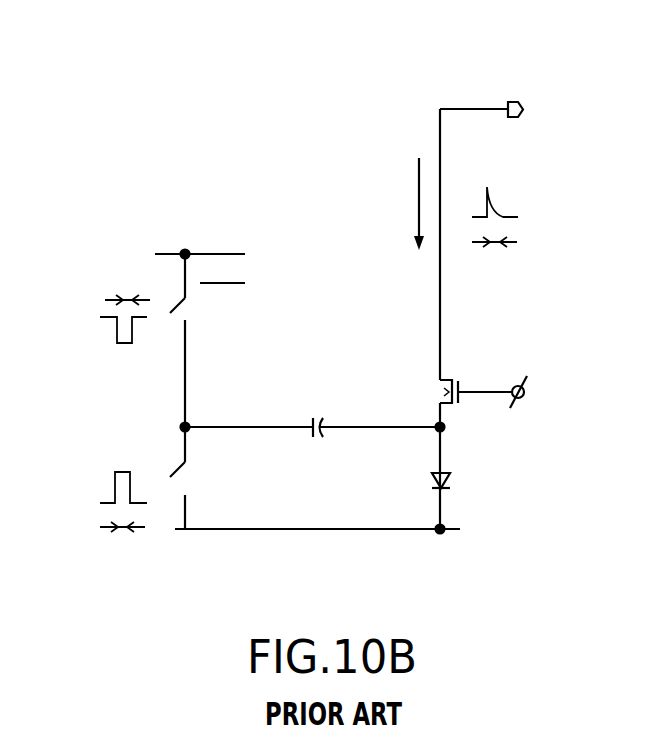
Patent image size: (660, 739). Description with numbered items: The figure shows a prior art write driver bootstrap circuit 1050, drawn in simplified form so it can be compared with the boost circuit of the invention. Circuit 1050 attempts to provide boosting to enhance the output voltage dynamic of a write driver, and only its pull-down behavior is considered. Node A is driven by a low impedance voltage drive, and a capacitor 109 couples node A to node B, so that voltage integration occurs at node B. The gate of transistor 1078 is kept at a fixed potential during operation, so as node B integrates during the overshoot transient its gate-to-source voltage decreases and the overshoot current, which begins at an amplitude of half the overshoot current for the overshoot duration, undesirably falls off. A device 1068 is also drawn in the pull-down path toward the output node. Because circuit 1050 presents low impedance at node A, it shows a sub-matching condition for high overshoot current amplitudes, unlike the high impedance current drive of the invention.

The circuit 1050 is at (210, 173).
The capacitor 109 is at (316, 411).
The transistor 1068 is at (457, 396).
The transistor 1078 is at (416, 493).